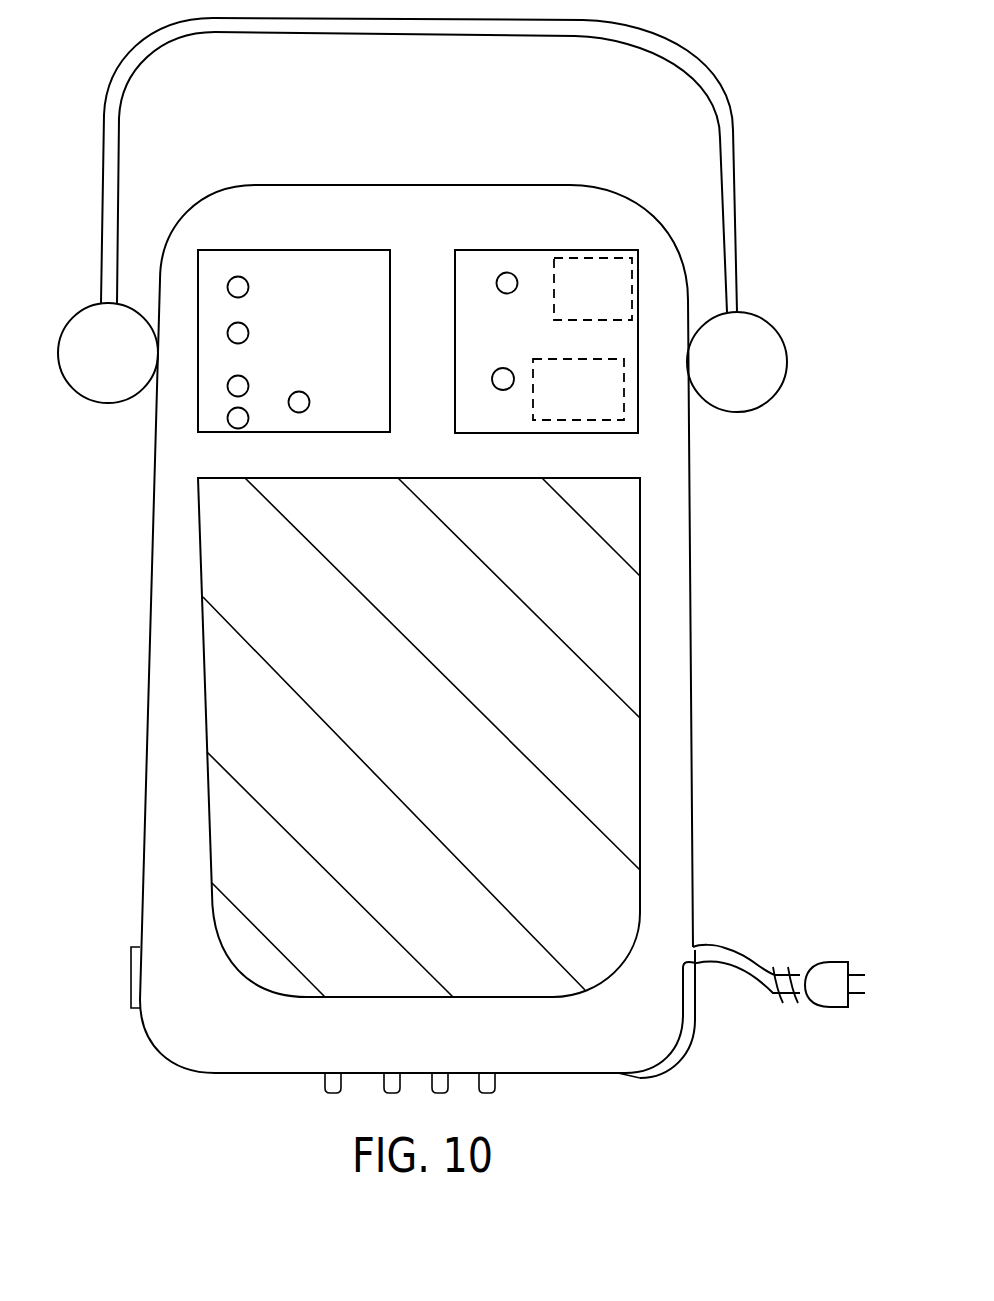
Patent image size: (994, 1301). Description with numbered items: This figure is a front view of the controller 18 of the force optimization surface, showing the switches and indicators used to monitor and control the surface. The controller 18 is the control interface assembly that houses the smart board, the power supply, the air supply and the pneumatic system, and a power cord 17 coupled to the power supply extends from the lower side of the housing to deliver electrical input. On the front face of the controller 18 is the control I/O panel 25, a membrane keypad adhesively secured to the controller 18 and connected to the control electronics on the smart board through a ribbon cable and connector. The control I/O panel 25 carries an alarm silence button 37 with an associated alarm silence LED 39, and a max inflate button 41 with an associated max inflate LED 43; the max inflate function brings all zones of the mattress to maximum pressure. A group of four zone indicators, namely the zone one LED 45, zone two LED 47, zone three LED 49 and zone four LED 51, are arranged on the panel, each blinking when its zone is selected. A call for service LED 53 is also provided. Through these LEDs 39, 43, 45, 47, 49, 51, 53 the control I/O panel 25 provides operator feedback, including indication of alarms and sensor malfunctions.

The power cord 17 is at (742, 956).
The controller 18 is at (80, 186).
The control I/O panel 25 is at (345, 245).
The alarm silence button 37 is at (607, 420).
The alarm silence LED 39 is at (501, 391).
The max inflate button 41 is at (623, 258).
The max inflate LED 43 is at (508, 273).
The zone 1 LED 45 is at (237, 277).
The zone 2 LED 47 is at (228, 333).
The zone 3 LED 49 is at (228, 392).
The zone 4 LED 51 is at (232, 428).
The call for service LED 53 is at (298, 413).